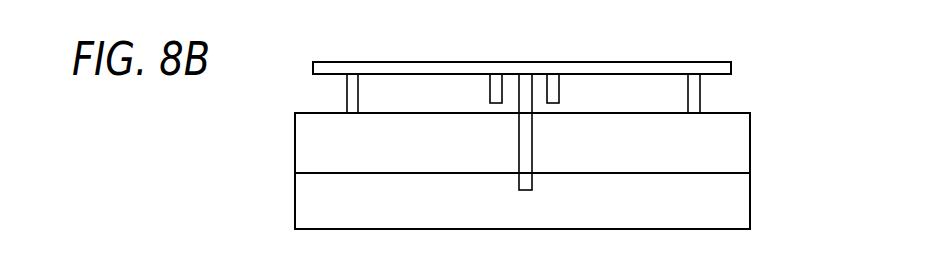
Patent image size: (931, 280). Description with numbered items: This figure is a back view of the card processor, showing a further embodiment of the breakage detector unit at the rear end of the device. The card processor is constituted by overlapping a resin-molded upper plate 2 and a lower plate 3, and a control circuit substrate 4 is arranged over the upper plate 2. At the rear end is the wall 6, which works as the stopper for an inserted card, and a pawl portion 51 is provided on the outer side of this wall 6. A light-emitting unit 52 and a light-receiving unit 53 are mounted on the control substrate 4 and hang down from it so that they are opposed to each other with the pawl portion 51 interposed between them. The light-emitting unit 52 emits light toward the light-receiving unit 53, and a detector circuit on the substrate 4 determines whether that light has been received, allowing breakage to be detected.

The control circuit substrate 4 is at (528, 63).
The upper plate 2 is at (745, 133).
The lower plate 3 is at (745, 203).
The pawl portion 51 is at (532, 150).
The light-emitting unit 52 is at (559, 97).
The light-receiving unit 53 is at (490, 85).
The wall 6 is at (547, 175).